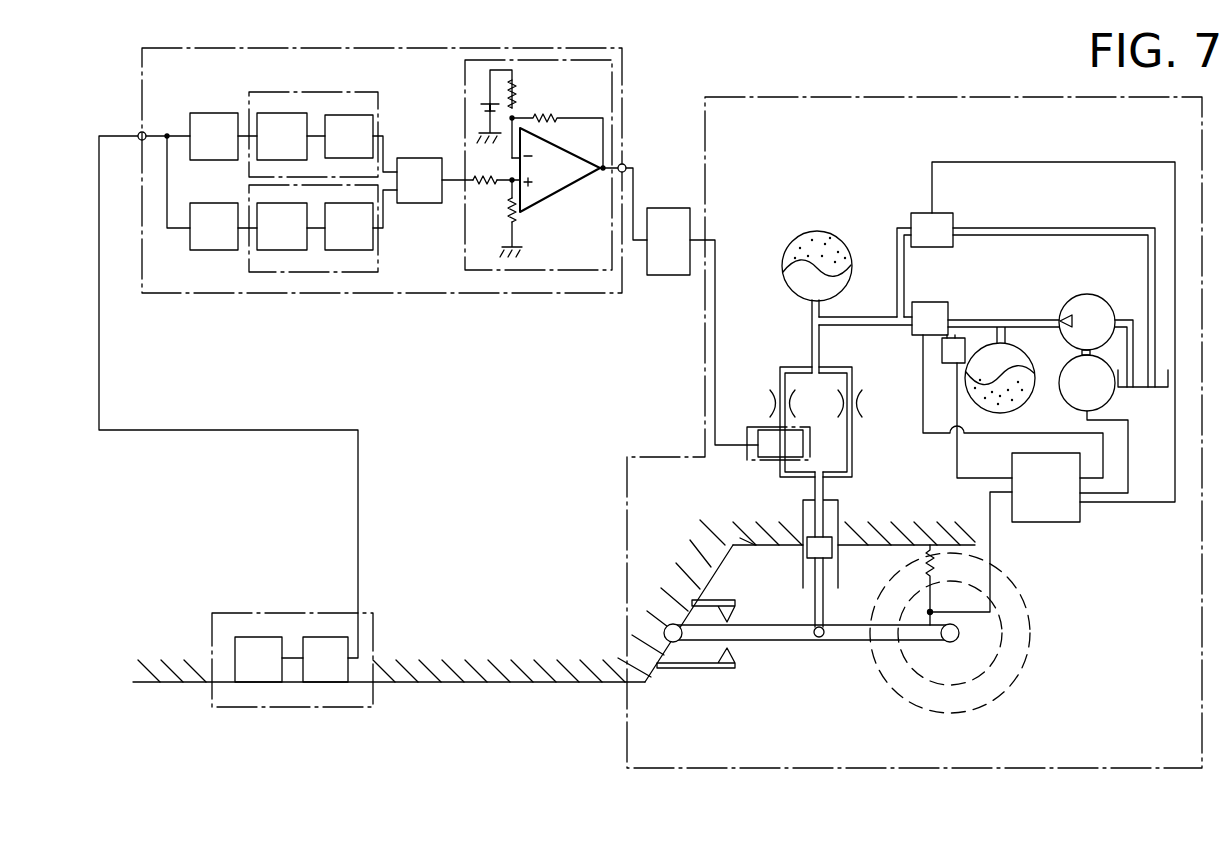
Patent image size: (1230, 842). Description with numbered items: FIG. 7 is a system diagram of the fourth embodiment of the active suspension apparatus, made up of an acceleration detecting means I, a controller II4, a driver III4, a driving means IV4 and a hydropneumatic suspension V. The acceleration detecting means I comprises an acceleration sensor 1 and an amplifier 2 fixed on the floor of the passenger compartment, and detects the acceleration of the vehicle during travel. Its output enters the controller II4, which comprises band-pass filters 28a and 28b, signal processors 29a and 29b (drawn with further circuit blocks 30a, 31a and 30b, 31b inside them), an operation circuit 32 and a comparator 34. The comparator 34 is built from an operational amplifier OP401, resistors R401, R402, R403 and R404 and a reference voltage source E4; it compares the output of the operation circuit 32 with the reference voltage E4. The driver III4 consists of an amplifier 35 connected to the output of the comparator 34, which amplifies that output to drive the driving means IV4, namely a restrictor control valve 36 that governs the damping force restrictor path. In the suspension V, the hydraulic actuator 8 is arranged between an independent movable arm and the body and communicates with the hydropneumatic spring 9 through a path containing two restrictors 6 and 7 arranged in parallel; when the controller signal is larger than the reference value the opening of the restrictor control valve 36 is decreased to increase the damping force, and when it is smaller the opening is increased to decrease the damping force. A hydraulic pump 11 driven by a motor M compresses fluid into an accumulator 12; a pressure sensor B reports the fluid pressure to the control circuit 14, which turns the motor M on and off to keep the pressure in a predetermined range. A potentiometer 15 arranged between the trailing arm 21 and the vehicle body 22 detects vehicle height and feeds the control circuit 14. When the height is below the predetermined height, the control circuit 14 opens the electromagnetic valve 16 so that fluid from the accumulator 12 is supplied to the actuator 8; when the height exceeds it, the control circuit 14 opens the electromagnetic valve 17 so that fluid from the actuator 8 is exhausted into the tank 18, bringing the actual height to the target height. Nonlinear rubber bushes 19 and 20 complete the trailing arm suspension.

The acceleration sensor 1 is at (258, 659).
The amplifier 2 is at (325, 659).
The restrictor 6 is at (768, 402).
The restrictor 7 is at (862, 402).
The hydraulic actuator 8 is at (838, 520).
The hydropneumatic spring 9 is at (818, 231).
The hydraulic pump 11 is at (1082, 294).
The accumulator 12 is at (1028, 365).
The control circuit 14 is at (1046, 487).
The potentiometer 15 is at (936, 575).
The electromagnetic valve 16 is at (930, 318).
The electromagnetic valve 17 is at (932, 230).
The tank 18 is at (1151, 391).
The nonlinear rubber bush 19 is at (735, 613).
The nonlinear rubber bush 20 is at (735, 655).
The trailing arm 21 is at (805, 641).
The vehicle body 22 is at (588, 640).
The band-pass filter 28a is at (214, 136).
The band-pass filter 28b is at (214, 226).
The signal processor 29a is at (328, 92).
The signal processor 29b is at (249, 263).
The filter 30a is at (282, 136).
The filter 30b is at (282, 226).
The rectifier 31a is at (349, 136).
The rectifier 31b is at (349, 226).
The operation circuit 32 is at (419, 180).
The comparator 34 is at (465, 250).
The amplifier 35 is at (668, 241).
The restrictor control valve 36 is at (778, 443).
The resistor R401 is at (538, 88).
The resistor R402 is at (557, 130).
The resistor R403 is at (491, 170).
The resistor R404 is at (536, 220).
The operational amplifier OP401 is at (560, 170).
The reference voltage source E4 is at (478, 98).
The pressure sensor B is at (953, 349).
The motor M is at (1087, 380).
The acceleration detecting means I is at (265, 616).
The controller II4 is at (410, 293).
The driver III4 is at (666, 208).
The driving means IV4 is at (751, 462).
The hydropneumatic suspension V is at (845, 97).